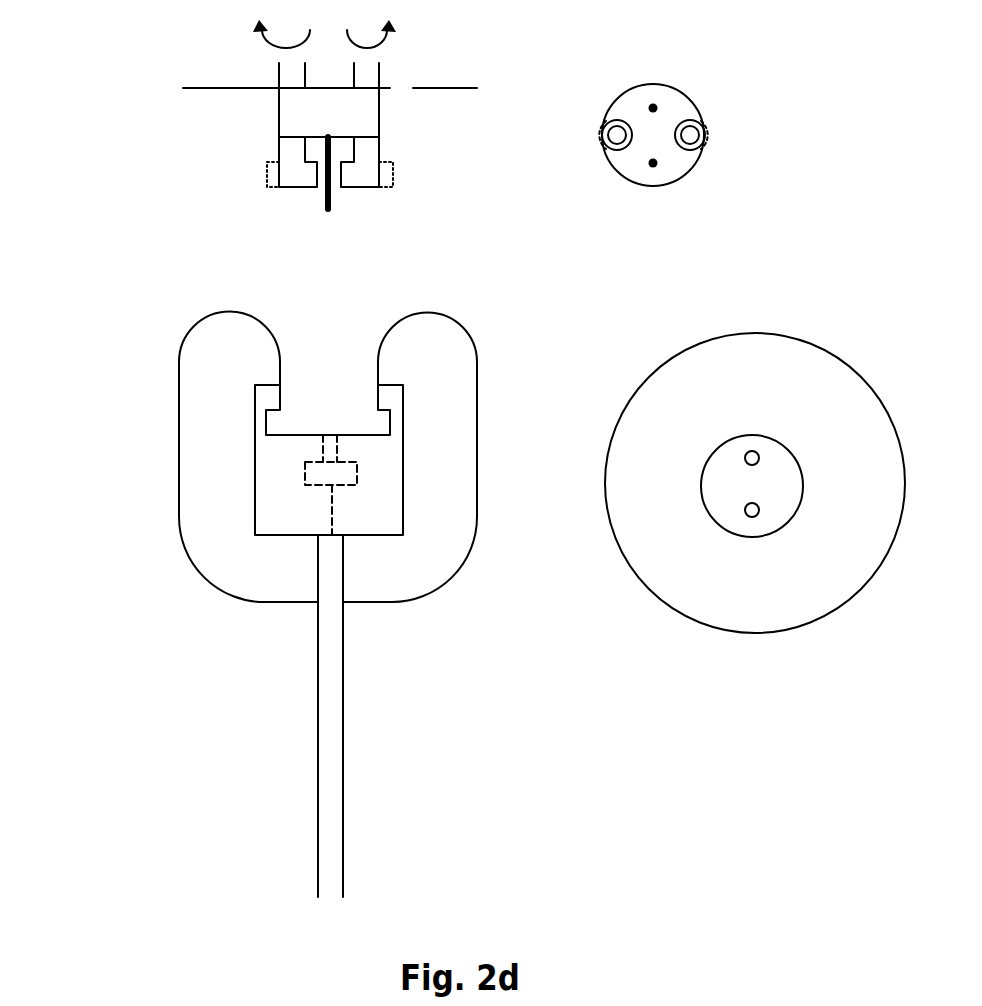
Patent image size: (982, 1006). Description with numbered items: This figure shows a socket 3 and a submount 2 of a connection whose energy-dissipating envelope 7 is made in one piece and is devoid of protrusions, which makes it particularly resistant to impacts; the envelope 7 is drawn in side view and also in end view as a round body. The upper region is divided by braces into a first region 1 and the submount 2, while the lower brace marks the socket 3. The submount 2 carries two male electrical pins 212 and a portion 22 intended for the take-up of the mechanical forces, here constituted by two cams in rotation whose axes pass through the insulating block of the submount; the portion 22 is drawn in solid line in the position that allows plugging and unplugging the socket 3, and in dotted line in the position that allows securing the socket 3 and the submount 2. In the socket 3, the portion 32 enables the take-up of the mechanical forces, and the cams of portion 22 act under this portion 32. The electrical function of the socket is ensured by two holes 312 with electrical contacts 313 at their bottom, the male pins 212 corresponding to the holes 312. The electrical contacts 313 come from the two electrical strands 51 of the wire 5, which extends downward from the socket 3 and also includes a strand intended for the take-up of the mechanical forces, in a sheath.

The first portion 1 is at (140, 12).
The submount 2 is at (140, 90).
The socket 3 is at (82, 313).
The portion of the submount intended for the take-up of the mechanical forces 22 is at (600, 135).
The male pins 212 is at (653, 163).
The energy-dissipating envelope 7 is at (713, 362).
The portion of the socket intended for the take-up of the mechanical forces 32 is at (392, 397).
The holes 312 is at (747, 453).
The electrical contacts 313 is at (347, 482).
The electrical strands 51 is at (330, 508).
The wire 5 is at (343, 777).